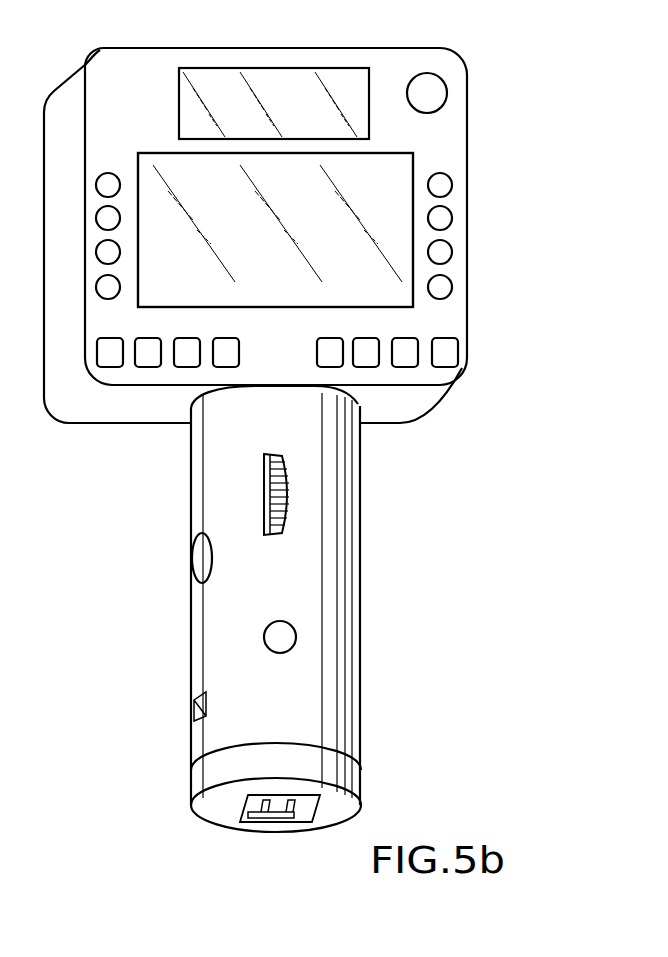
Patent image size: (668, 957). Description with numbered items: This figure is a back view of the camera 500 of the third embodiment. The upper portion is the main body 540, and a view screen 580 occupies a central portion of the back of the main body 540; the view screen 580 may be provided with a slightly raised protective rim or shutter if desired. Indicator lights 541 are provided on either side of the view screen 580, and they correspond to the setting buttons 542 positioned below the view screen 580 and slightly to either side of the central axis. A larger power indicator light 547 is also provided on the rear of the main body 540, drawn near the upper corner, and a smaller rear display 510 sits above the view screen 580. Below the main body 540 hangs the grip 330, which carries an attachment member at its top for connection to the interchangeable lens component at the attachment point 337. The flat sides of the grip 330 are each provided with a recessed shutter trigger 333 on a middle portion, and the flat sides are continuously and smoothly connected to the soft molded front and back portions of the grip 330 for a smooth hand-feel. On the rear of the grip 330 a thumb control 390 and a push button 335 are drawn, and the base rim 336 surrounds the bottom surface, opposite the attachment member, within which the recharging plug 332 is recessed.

The camera 500 is at (516, 434).
The upper display 510 is at (315, 112).
The view screen 580 is at (190, 290).
The power indicator light 547 is at (432, 90).
The indicator lights 541 is at (438, 184).
The main body 540 is at (456, 264).
The setting buttons 542 is at (456, 352).
The grip 330 is at (503, 559).
The attachment point 337 is at (357, 403).
The thumbwheel 390 is at (280, 514).
The shutter trigger 333 is at (200, 556).
The push button 335 is at (289, 635).
The handle base rim 336 is at (347, 779).
The recharging plug 332 is at (258, 812).